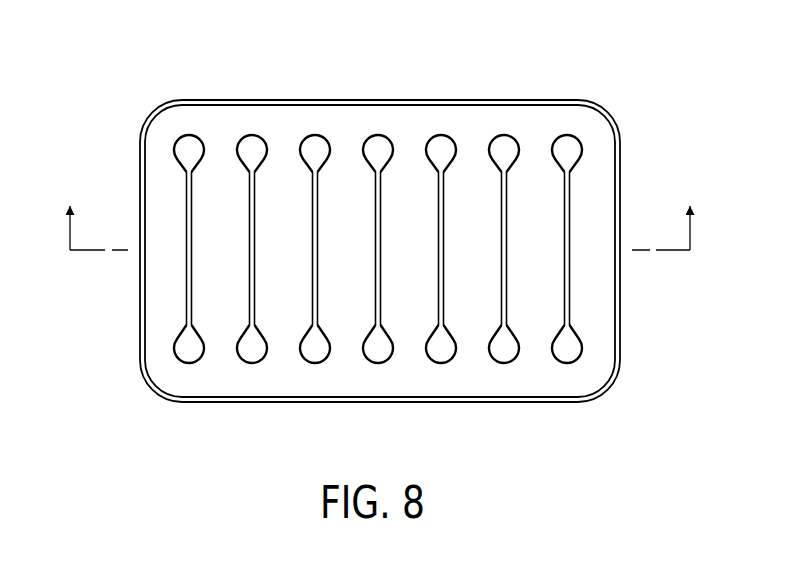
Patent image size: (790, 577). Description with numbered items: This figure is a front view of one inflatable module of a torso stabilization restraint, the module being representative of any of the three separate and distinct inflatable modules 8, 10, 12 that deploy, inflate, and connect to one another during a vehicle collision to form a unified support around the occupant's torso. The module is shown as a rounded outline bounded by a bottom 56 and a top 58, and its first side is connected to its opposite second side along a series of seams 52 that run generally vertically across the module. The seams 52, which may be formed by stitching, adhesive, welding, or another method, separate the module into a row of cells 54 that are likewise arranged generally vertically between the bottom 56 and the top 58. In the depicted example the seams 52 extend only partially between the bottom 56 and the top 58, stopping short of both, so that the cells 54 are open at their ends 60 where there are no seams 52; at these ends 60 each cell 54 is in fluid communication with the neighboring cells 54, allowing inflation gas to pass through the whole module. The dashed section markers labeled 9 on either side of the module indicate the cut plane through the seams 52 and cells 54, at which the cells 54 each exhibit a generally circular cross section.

The inflatable module 8 is at (376, 238).
The inflatable module 10 is at (376, 238).
The inflatable module 12 is at (376, 238).
The seam 52 is at (210, 300).
The cell 54 is at (275, 302).
The bottom 56 is at (488, 404).
The top 58 is at (376, 238).
The end 60 is at (245, 122).
The section line for FIG. 9 is at (380, 212).